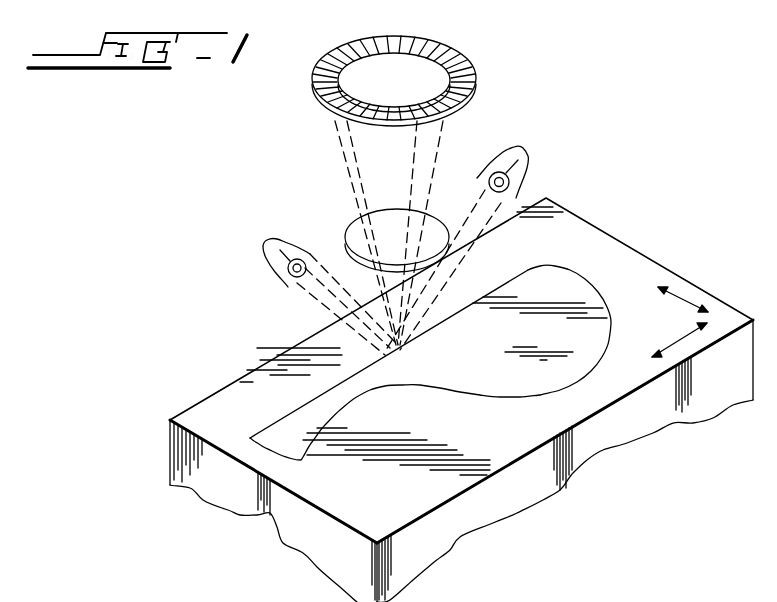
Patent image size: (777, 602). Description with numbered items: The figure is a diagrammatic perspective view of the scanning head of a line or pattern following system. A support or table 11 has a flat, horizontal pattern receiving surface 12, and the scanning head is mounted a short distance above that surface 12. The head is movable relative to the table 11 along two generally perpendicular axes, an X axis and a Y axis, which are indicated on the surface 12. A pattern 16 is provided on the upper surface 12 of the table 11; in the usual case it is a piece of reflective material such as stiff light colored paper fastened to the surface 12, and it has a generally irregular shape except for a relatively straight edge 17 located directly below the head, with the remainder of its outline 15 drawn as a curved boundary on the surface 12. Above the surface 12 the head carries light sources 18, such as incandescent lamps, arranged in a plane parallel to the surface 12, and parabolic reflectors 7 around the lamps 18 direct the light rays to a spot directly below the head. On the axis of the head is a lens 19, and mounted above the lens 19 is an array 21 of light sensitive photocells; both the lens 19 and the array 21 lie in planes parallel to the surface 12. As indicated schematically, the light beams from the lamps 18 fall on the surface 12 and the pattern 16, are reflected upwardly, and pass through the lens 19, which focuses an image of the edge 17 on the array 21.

The parabolic reflector 7 is at (524, 143).
The table 11 is at (420, 400).
The pattern receiving surface 12 is at (183, 410).
The circular pattern region 15 is at (598, 283).
The pattern 16 is at (482, 370).
The edge 17 is at (505, 283).
The light source 18 is at (287, 278).
The lens 19 is at (432, 220).
The array of light sensitive photocells 21 is at (456, 40).